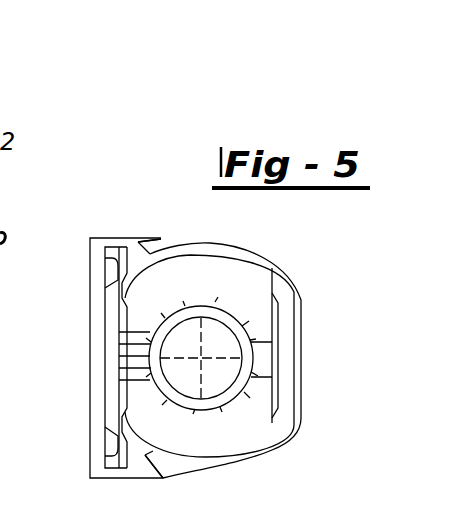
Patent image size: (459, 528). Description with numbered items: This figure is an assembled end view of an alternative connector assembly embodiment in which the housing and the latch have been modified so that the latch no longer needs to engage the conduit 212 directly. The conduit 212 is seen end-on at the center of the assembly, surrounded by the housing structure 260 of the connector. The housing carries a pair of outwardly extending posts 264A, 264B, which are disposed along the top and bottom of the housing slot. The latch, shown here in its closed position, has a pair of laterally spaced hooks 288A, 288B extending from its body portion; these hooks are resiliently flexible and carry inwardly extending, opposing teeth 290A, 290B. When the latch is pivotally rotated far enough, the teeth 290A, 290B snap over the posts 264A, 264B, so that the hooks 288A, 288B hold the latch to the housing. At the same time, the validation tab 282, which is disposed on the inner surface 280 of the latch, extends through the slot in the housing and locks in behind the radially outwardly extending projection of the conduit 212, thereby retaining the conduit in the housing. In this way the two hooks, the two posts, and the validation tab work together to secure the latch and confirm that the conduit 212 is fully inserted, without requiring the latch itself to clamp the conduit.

The conduit 212 is at (242, 321).
The housing 260 is at (268, 264).
The post 264A is at (134, 238).
The post 264B is at (128, 453).
The inner surface 280 is at (110, 257).
The validation tab 282 is at (137, 333).
The hook 288A is at (139, 240).
The hook 288B is at (133, 478).
The tooth 290A is at (162, 240).
The tooth 290B is at (150, 465).